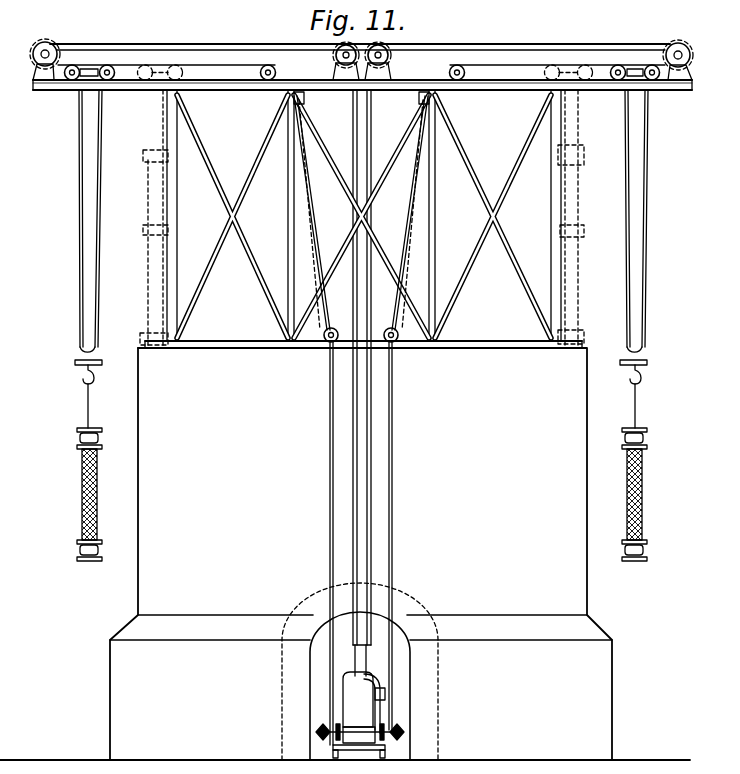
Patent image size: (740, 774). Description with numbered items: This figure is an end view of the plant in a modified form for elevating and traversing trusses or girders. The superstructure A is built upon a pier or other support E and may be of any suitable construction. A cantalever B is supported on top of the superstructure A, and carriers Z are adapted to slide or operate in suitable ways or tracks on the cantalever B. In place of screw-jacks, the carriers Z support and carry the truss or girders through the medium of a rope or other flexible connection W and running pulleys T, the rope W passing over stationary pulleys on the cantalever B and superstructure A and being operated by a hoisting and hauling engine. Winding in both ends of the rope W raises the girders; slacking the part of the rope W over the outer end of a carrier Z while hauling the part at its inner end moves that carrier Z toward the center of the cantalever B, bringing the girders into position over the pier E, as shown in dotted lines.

The rope W is at (217, 43).
The cantalever B is at (243, 91).
The carrier Z is at (80, 81).
The superstructure A is at (176, 180).
The hidden rope fittings H is at (156, 160).
The pier E is at (361, 554).
The running pulley T is at (647, 354).
The counterweight Q is at (98, 491).